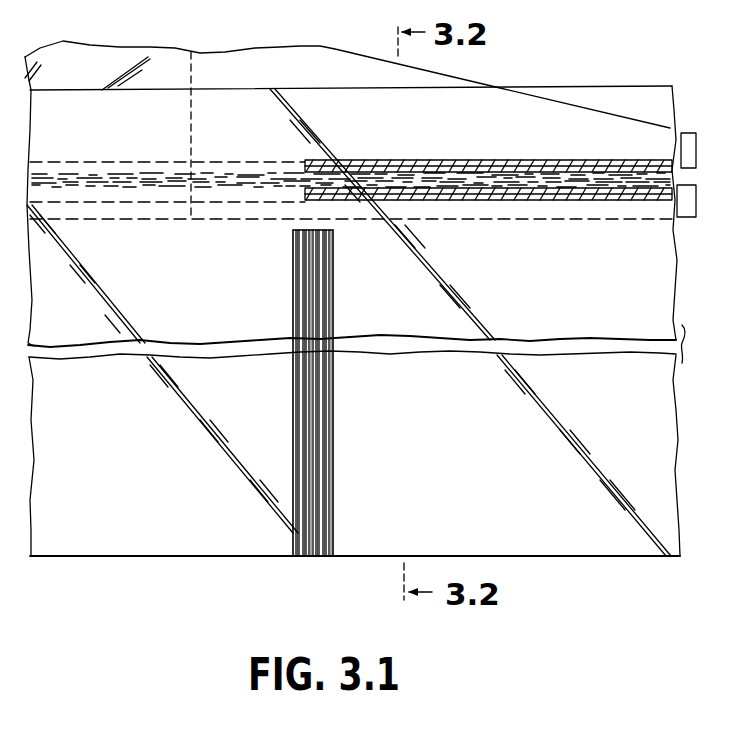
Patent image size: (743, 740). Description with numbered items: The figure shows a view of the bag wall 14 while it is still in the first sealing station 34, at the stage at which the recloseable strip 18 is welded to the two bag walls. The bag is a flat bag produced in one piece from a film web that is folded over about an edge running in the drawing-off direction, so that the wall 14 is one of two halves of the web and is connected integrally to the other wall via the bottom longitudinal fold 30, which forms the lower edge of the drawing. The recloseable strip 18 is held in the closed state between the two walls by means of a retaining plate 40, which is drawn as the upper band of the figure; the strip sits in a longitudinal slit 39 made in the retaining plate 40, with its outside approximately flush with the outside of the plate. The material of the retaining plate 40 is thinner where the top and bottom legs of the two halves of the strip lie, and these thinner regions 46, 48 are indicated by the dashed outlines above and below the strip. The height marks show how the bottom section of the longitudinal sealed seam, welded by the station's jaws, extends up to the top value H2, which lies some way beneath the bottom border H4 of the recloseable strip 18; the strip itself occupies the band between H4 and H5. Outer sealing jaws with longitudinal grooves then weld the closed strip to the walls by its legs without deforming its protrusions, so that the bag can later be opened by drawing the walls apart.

The wall 14 is at (457, 458).
The recloseable strip 18 is at (430, 157).
The bottom longitudinal fold 30 is at (173, 564).
The first sealing station 34 is at (519, 58).
The longitudinal slit 39 is at (699, 171).
The retaining plate 40 is at (219, 72).
The thinner region 46 is at (227, 167).
The thinner region 48 is at (229, 211).
The top value of bottom seam section H2 is at (338, 232).
The bottom border of recloseable strip H4 is at (518, 202).
The top border of recloseable strip H5 is at (518, 158).